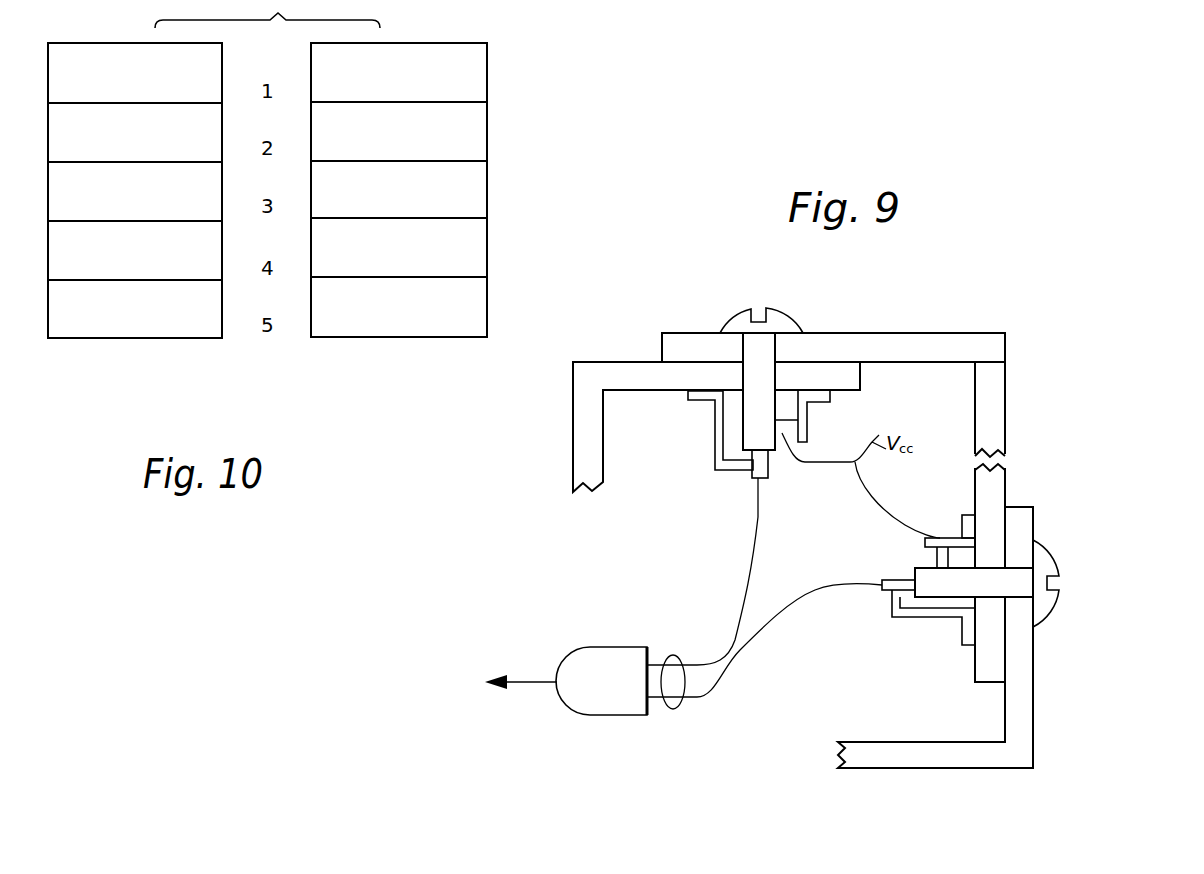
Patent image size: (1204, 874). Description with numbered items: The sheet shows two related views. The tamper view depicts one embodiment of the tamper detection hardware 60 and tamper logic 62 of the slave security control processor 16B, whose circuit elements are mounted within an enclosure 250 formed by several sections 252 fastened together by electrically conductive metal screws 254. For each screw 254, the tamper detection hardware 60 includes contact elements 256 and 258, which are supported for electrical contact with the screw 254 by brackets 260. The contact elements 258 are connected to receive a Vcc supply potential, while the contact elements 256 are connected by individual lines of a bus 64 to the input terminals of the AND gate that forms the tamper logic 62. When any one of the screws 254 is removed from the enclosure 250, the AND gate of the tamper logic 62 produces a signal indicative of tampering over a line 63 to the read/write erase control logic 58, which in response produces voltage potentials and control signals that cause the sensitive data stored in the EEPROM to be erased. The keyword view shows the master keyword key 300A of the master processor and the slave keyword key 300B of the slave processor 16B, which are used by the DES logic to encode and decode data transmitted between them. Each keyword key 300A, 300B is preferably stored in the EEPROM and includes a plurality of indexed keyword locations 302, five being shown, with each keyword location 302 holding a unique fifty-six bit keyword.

In FIG. 10, the master keyword key 300A is at (99, 343).
In FIG. 10, the slave keyword key 300B is at (365, 343).
In FIG. 10, the indexed keyword location 302 is at (310, 68).
In FIG. 9, the slave security control processor 16B is at (1060, 380).
In FIG. 9, the enclosure 250 is at (919, 330).
In FIG. 9, the enclosure section 252 is at (598, 362).
In FIG. 9, the electrically conductive metal screw 254 is at (734, 318).
In FIG. 9, the contact element 256 is at (752, 476).
In FIG. 9, the contact element 258 is at (783, 425).
In FIG. 9, the bracket 260 is at (715, 443).
In FIG. 9, the tamper detection hardware 60 is at (779, 466).
In FIG. 9, the tamper logic 62 is at (594, 715).
In FIG. 9, the line 63 is at (538, 678).
In FIG. 9, the bus 64 is at (675, 655).
In FIG. 9, the read/write erase control logic 58 is at (399, 694).